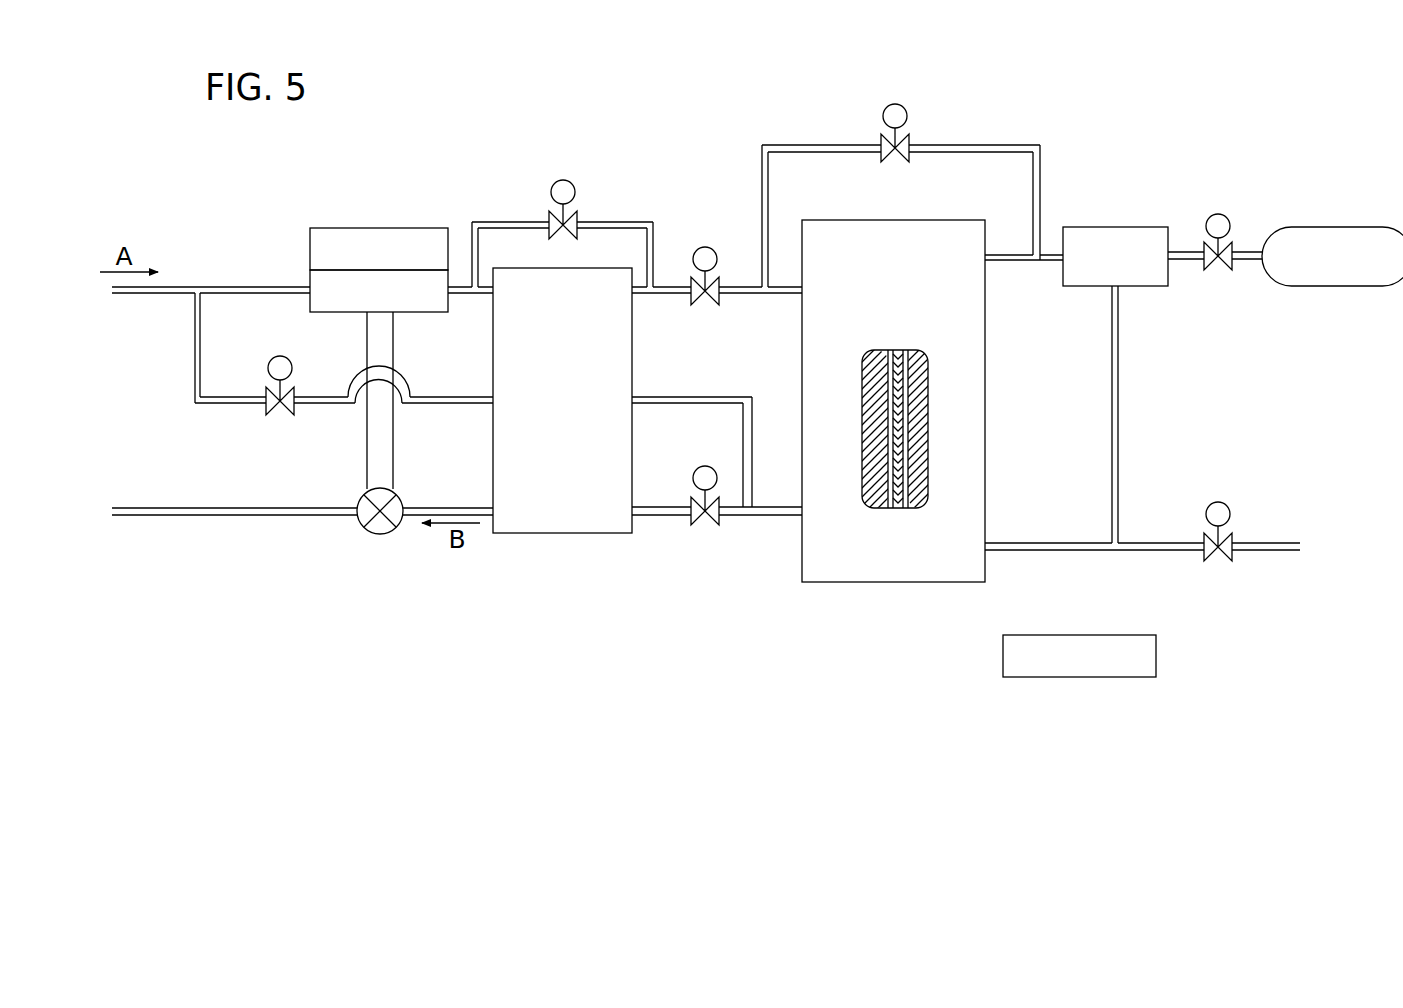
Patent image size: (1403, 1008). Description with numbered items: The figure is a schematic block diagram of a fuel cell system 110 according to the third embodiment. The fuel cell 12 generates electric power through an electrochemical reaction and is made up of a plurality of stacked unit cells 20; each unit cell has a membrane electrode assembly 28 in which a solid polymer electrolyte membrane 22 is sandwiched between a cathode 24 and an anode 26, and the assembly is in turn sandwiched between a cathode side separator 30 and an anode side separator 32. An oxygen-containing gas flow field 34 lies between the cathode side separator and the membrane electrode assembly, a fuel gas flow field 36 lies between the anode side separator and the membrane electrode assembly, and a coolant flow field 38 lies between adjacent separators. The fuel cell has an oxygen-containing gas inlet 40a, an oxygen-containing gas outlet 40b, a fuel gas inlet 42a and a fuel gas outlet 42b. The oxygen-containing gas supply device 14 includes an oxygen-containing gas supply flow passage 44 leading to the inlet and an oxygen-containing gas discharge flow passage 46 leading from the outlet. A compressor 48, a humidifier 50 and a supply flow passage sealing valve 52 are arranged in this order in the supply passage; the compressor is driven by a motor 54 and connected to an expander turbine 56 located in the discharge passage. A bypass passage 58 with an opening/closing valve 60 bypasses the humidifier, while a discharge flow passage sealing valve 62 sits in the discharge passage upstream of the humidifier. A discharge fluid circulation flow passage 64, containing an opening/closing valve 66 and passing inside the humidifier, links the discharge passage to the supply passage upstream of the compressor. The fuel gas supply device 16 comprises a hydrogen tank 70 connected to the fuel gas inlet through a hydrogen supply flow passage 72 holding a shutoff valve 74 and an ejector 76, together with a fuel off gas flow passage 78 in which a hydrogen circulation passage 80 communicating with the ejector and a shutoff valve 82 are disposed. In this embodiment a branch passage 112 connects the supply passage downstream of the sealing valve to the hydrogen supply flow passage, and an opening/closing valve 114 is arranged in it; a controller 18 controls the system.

The fuel cell system 110 is at (370, 147).
The fuel cell 12 is at (914, 410).
The oxygen-containing gas supply device 14 is at (349, 262).
The fuel gas supply device 16 is at (1233, 342).
The controller 18 is at (1044, 635).
The unit cell 20 is at (943, 236).
The solid polymer electrolyte membrane 22 is at (898, 350).
The cathode 24 is at (890, 350).
The anode 26 is at (907, 350).
The membrane electrode assembly 28 is at (906, 375).
The cathode side separator 30 is at (868, 350).
The anode side separator 32 is at (925, 350).
The oxygen-containing gas flow field 34 is at (885, 444).
The fuel gas flow field 36 is at (918, 454).
The coolant flow field 38 is at (863, 478).
The oxygen-containing gas inlet 40a is at (800, 296).
The oxygen-containing gas outlet 40b is at (800, 516).
The fuel gas inlet 42a is at (985, 254).
The fuel gas outlet 42b is at (985, 543).
The oxygen-containing gas supply flow passage 44 is at (228, 286).
The oxygen-containing gas discharge flow passage 46 is at (190, 507).
The compressor 48 is at (310, 310).
The humidifier 50 is at (632, 338).
The supply flow passage sealing valve 52 is at (705, 247).
The motor 54 is at (310, 244).
The expander turbine 56 is at (400, 495).
The bypass passage 58 is at (492, 222).
The opening/closing valve 60 is at (563, 180).
The discharge flow passage sealing valve 62 is at (705, 466).
The discharge fluid circulation flow passage 64 is at (333, 397).
The opening/closing valve 66 is at (280, 413).
The hydrogen tank 70 is at (1322, 227).
The hydrogen supply flow passage 72 is at (1188, 262).
The shutoff valve 74 is at (1218, 214).
The ejector 76 is at (1150, 227).
The fuel off gas flow passage 78 is at (1272, 543).
The hydrogen circulation passage 80 is at (1118, 394).
The shutoff valve 82 is at (1218, 502).
The branch passage 112 is at (800, 145).
The opening/closing valve 114 is at (895, 104).